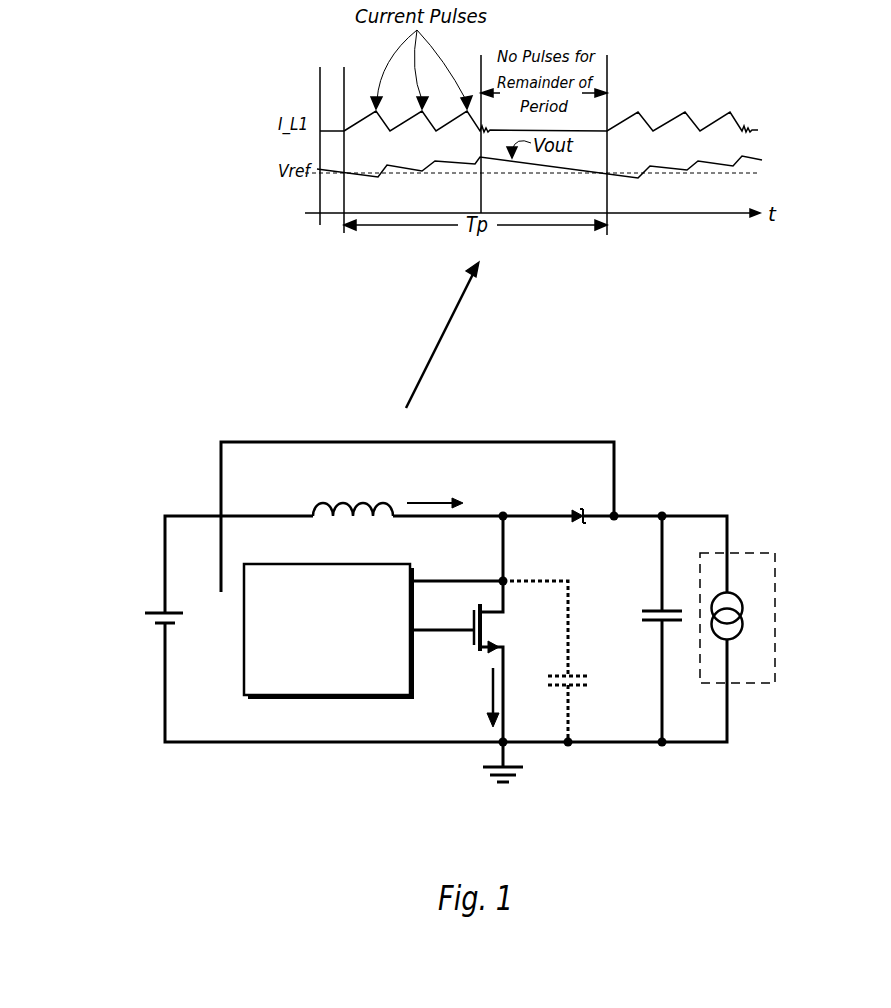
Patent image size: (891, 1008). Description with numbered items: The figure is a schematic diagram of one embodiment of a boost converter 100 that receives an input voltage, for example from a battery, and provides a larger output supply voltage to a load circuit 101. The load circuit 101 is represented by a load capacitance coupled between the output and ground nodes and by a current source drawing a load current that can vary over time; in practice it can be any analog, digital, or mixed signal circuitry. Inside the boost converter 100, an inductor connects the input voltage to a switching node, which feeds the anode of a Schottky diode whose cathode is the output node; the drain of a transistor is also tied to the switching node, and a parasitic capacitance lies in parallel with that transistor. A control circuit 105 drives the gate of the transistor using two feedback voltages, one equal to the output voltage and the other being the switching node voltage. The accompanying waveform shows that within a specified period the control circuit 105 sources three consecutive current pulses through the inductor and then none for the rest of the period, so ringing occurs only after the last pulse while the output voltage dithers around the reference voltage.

The boost converter 100 is at (560, 424).
The load circuit 101 is at (775, 543).
The control circuit 105 is at (344, 669).